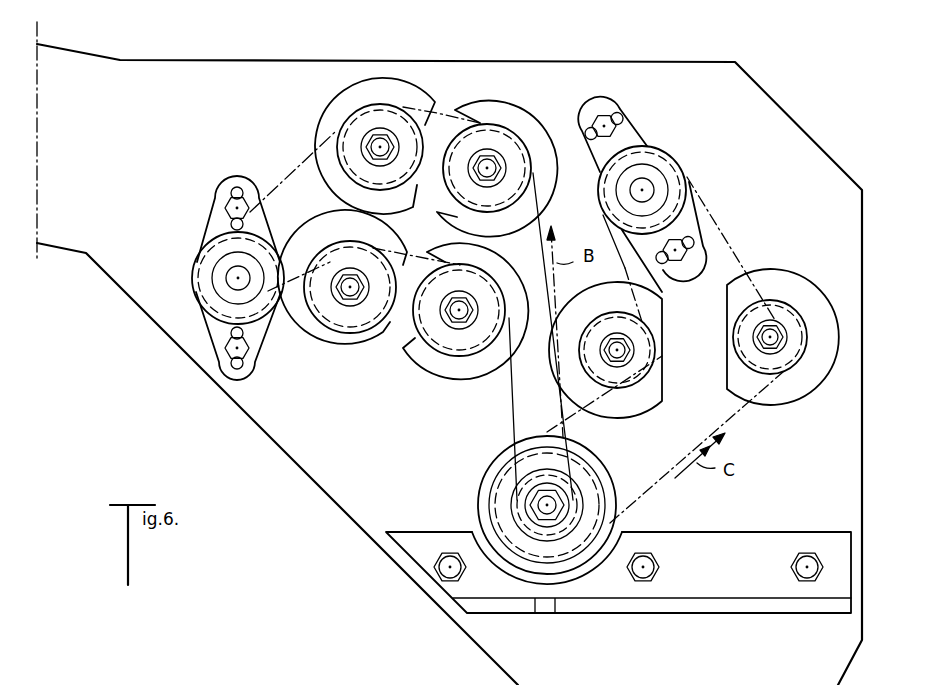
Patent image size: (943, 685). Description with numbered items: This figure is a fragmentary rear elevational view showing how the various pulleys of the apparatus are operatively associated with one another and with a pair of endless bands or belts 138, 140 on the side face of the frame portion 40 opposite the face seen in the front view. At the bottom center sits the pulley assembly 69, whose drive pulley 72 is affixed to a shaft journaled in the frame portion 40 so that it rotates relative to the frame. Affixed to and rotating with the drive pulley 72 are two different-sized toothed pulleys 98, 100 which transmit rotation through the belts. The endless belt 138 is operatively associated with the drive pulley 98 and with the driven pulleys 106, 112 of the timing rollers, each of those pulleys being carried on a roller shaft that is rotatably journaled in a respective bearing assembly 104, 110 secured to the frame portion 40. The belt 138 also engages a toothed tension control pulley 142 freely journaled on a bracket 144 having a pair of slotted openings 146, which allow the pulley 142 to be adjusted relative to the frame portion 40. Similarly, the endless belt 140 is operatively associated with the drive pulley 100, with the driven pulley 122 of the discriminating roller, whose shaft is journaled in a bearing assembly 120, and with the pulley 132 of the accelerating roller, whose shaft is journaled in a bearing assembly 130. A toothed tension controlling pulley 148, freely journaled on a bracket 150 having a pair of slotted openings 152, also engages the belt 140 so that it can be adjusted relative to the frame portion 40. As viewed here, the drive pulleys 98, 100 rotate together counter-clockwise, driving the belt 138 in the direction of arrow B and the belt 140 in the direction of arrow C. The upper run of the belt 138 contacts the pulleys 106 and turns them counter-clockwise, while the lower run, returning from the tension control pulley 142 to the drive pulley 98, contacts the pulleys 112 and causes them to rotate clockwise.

The frame portion 40 is at (817, 497).
The pulley assembly 69 is at (494, 452).
The drive pulley 72 is at (547, 504).
The toothed pulley 98 is at (570, 512).
The toothed pulley 100 is at (495, 498).
The bearing assembly 104 is at (340, 93).
The toothed pulley 106 is at (377, 120).
The bearing assembly 110 is at (308, 330).
The toothed pulley 112 is at (342, 330).
The bearing assembly 120 is at (780, 395).
The toothed pulley 122 is at (795, 373).
The bearing assembly 130 is at (628, 407).
The toothed pulley 132 is at (580, 363).
The endless belt 138 is at (292, 172).
The endless belt 140 is at (733, 242).
The tension control pulley 142 is at (208, 262).
The bracket 144 is at (215, 218).
The slotted openings 146 is at (232, 193).
The tension controlling pulley 148 is at (668, 168).
The bracket 150 is at (630, 125).
The slotted openings 152 is at (602, 113).